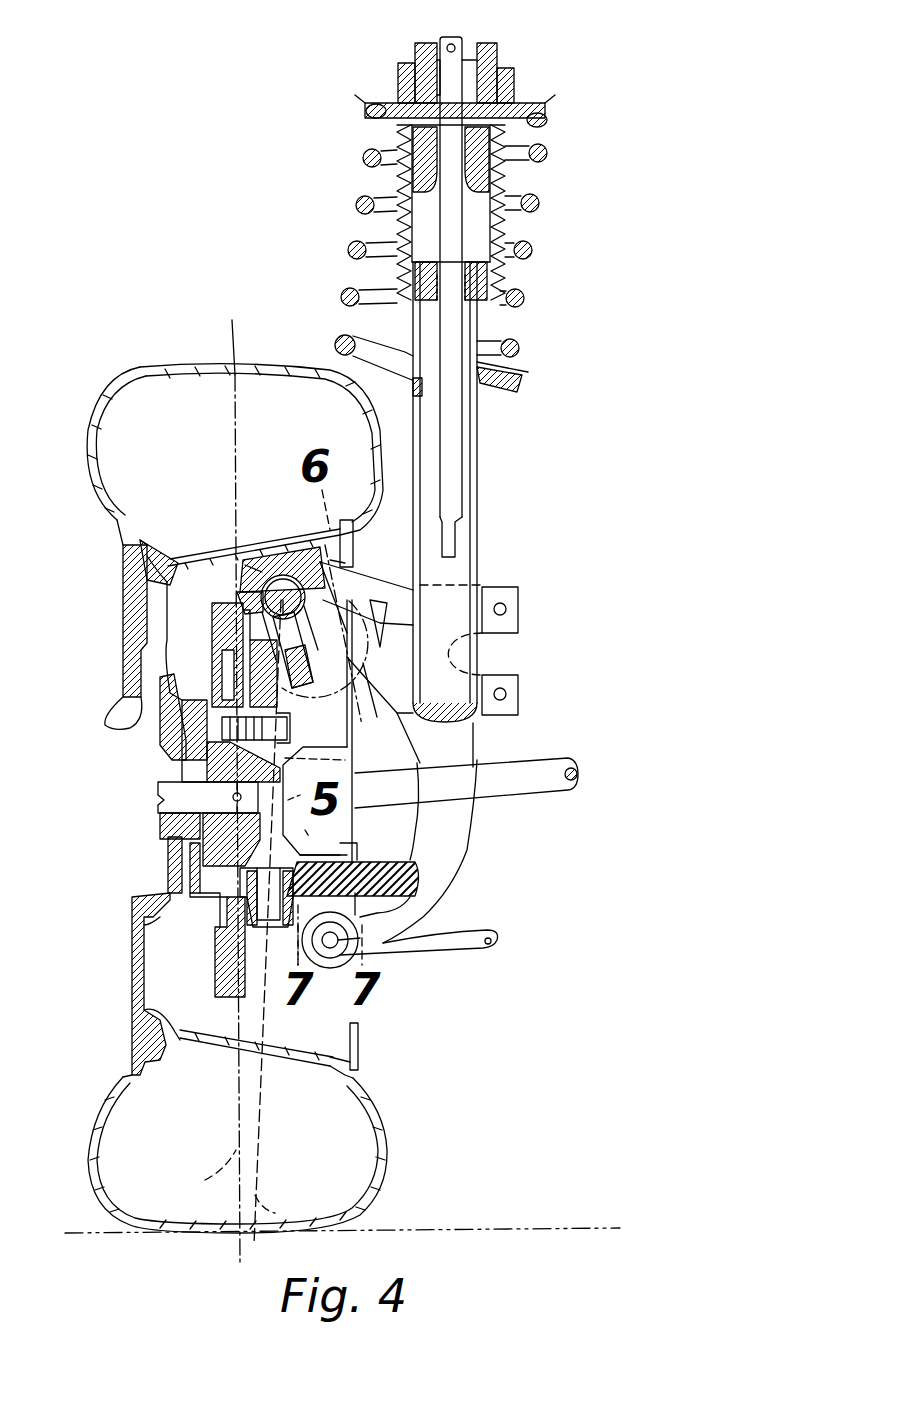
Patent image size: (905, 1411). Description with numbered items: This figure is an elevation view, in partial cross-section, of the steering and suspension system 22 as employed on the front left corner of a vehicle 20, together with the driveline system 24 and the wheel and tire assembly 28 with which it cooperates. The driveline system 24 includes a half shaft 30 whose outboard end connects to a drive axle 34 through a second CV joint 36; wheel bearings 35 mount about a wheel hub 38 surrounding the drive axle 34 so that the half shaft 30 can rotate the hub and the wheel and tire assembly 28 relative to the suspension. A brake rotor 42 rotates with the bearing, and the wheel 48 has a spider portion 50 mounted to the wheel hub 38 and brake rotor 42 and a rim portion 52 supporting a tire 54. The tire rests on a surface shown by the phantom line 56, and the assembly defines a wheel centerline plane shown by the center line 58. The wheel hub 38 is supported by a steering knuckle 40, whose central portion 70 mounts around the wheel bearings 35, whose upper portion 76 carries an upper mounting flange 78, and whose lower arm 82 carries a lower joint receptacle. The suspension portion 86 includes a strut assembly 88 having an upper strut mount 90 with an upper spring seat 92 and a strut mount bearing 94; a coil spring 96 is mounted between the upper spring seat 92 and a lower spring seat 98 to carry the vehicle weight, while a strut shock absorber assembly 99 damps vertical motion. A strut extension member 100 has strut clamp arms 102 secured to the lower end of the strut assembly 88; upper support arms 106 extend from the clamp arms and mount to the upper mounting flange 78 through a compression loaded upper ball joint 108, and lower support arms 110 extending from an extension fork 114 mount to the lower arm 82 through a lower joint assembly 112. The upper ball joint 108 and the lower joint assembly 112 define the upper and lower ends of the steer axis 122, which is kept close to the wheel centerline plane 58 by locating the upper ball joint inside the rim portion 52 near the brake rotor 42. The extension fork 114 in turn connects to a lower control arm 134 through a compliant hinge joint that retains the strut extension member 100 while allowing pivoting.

The vehicle 20 is at (190, 205).
The steering and suspension system 22 is at (580, 505).
The driveline system 24 is at (578, 822).
The wheel and tire assembly 28 is at (100, 360).
The half shaft 30 is at (550, 780).
The drive axle 34 is at (160, 815).
The wheel bearings 35 is at (175, 880).
The second CV joint 36 is at (355, 858).
The wheel hub 38 is at (180, 780).
The steering knuckle 40 is at (212, 698).
The brake rotor 42 is at (212, 625).
The wheel 48 is at (150, 722).
The spider portion 50 is at (140, 945).
The rim portion 52 is at (330, 1038).
The tire 54 is at (100, 1196).
The phantom line 56 is at (494, 1226).
The center line 58 is at (205, 1175).
The central portion 70 is at (283, 700).
The upper portion 76 is at (212, 640).
The upper mounting flange 78 is at (358, 690).
The lower arm 82 is at (237, 938).
The suspension portion 86 is at (550, 322).
The strut assembly 88 is at (548, 102).
The upper strut mount 90 is at (504, 62).
The upper spring seat 92 is at (552, 120).
The strut mount bearing 94 is at (515, 82).
The coil spring 96 is at (545, 198).
The lower spring seat 98 is at (505, 395).
The strut shock absorber assembly 99 is at (476, 495).
The strut extension member 100 is at (522, 702).
The strut clamp arms 102 is at (512, 645).
The upper support arms 106 is at (380, 590).
The compression loaded upper ball joint 108 is at (250, 560).
The lower support arms 110 is at (423, 910).
The lower joint assembly 112 is at (425, 872).
The extension fork 114 is at (495, 878).
The steer axis 122 is at (290, 1205).
The lower control arm 134 is at (462, 945).